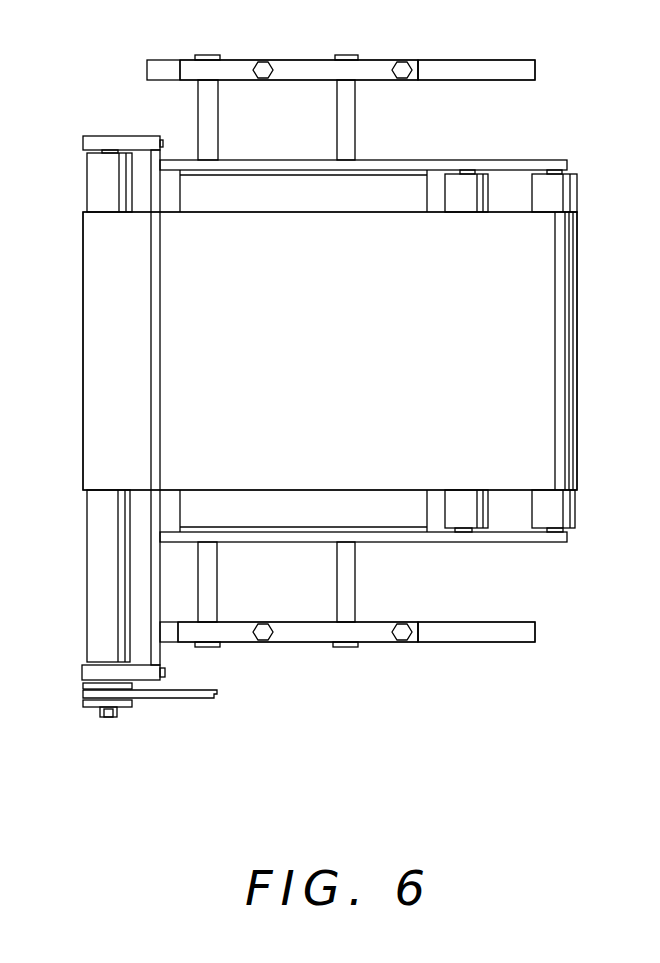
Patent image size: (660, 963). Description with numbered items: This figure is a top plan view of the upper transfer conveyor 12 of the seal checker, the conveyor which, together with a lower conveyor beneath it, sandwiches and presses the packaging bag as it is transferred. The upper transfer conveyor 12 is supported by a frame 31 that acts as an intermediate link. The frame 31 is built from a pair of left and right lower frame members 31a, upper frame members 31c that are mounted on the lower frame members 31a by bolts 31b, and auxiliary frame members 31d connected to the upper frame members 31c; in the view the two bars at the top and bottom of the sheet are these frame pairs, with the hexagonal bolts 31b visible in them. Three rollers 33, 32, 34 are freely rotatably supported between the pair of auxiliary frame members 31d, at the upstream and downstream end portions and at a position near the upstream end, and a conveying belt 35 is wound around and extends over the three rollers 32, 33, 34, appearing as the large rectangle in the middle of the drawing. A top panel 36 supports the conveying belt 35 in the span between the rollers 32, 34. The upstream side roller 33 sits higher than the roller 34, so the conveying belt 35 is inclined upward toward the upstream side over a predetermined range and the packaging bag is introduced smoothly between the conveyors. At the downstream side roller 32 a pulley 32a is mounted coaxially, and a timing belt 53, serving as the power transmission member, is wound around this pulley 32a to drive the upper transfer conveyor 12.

The upper transfer conveyor 12 is at (563, 138).
The frame 31 is at (488, 643).
The lower frame member 31a is at (470, 70).
The bolt 31b is at (262, 65).
The upper frame member 31c is at (368, 69).
The auxiliary frame member 31d is at (562, 163).
The roller 32 is at (95, 183).
The pulley 32a is at (90, 708).
The roller 33 is at (558, 202).
The roller 34 is at (468, 202).
The conveying belt 35 is at (568, 320).
The top panel 36 is at (310, 522).
The timing belt 53 is at (198, 697).